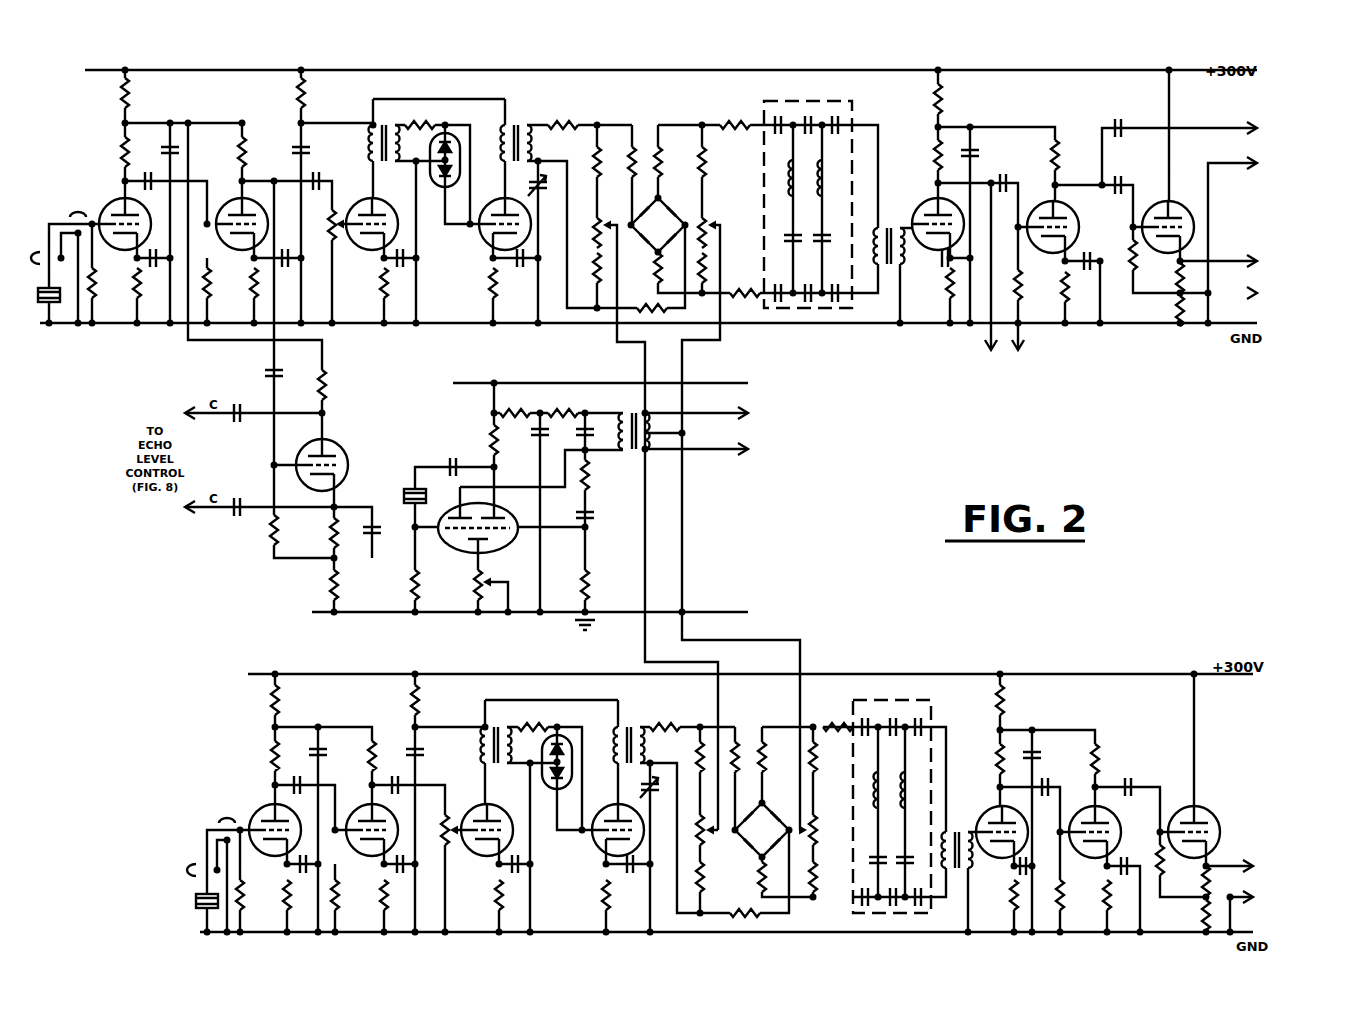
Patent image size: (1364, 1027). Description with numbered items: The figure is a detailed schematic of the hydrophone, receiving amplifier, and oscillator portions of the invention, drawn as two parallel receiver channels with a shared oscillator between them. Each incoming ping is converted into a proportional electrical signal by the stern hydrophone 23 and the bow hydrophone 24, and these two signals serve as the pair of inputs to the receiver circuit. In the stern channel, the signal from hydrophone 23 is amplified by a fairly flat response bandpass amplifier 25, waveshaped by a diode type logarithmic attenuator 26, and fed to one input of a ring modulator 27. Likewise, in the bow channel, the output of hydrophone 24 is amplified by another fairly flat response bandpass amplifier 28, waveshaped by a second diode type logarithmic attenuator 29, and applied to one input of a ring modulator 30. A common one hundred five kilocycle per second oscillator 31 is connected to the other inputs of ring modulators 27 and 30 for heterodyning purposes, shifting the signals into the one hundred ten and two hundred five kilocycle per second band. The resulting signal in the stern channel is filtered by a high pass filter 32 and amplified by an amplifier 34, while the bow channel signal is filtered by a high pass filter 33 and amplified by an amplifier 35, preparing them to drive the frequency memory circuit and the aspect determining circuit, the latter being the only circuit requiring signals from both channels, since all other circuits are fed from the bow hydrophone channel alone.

The stern hydrophone 23 is at (197, 898).
The bow hydrophone 24 is at (38, 297).
The bandpass amplifier 25 is at (330, 703).
The logarithmic attenuator 26 is at (523, 693).
The ring modulator 27 is at (748, 706).
The bandpass amplifier 28 is at (208, 108).
The logarithmic attenuator 29 is at (449, 90).
The ring modulator 30 is at (645, 124).
The oscillator 31 is at (447, 432).
The high pass filter 32 is at (912, 695).
The high pass filter 33 is at (860, 102).
The amplifier 34 is at (1100, 703).
The amplifier 35 is at (1058, 90).